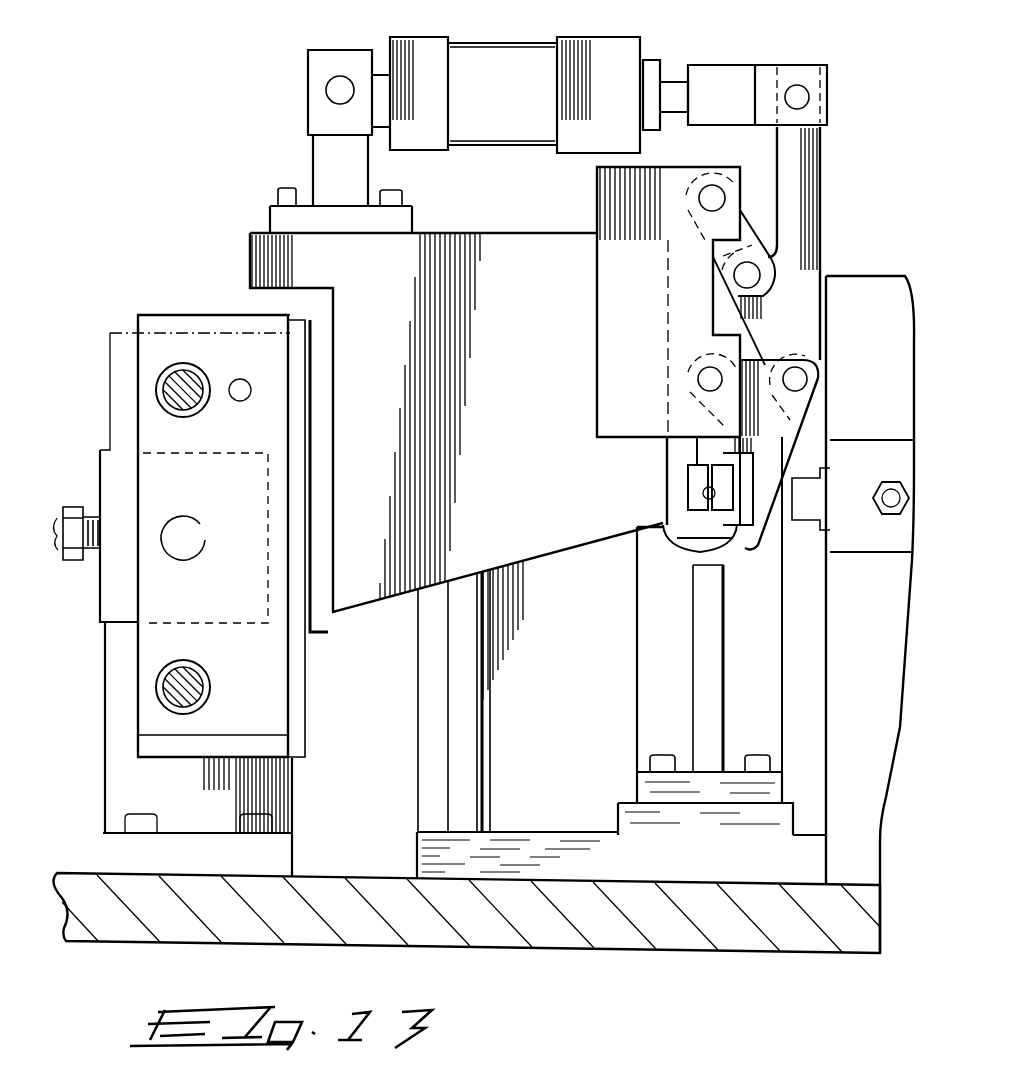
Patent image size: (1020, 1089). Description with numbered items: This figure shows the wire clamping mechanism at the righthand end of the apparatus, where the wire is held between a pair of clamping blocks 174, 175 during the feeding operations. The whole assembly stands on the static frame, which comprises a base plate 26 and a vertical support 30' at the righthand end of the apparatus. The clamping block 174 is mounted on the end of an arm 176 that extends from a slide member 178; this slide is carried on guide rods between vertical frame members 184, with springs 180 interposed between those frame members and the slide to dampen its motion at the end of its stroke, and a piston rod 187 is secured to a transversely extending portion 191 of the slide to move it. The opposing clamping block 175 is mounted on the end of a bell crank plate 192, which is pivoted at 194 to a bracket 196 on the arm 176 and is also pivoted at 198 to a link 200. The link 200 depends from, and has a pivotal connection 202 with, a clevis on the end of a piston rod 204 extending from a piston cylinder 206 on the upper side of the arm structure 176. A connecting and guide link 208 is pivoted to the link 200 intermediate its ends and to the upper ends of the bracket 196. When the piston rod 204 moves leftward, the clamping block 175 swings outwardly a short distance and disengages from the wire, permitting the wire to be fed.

The base plate 26 is at (548, 928).
The vertical support 30' is at (684, 681).
The clamping block 174 is at (688, 493).
The clamping block 175 is at (723, 500).
The arm 176 is at (532, 543).
The slide member 178 is at (220, 345).
The springs 180 is at (160, 373).
The vertical frame members 184 is at (122, 777).
The piston rod 187 is at (193, 531).
The transversely extending portion 191 is at (140, 590).
The bell crank plate 192 is at (768, 440).
The pivot 194 is at (700, 382).
The bracket 196 is at (597, 318).
The pivot 198 is at (800, 380).
The link 200 is at (805, 296).
The pivotal connection 202 is at (800, 96).
The piston rod 204 is at (668, 93).
The piston cylinder 206 is at (502, 51).
The connecting and guide link 208 is at (748, 236).